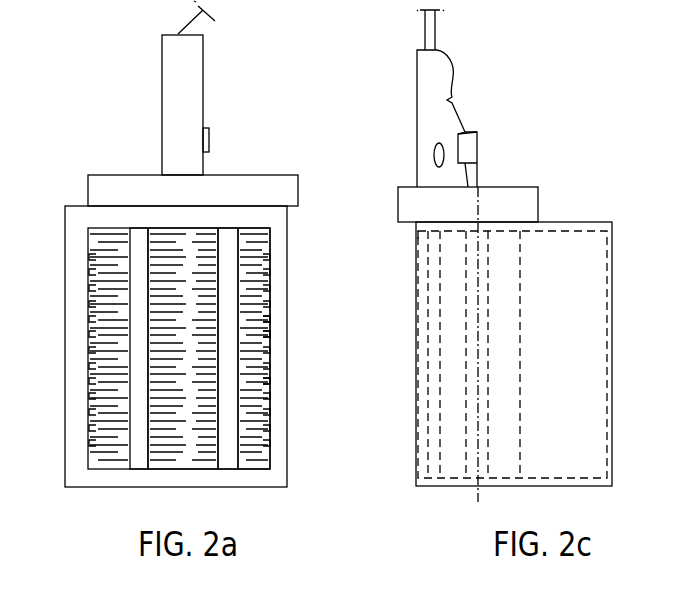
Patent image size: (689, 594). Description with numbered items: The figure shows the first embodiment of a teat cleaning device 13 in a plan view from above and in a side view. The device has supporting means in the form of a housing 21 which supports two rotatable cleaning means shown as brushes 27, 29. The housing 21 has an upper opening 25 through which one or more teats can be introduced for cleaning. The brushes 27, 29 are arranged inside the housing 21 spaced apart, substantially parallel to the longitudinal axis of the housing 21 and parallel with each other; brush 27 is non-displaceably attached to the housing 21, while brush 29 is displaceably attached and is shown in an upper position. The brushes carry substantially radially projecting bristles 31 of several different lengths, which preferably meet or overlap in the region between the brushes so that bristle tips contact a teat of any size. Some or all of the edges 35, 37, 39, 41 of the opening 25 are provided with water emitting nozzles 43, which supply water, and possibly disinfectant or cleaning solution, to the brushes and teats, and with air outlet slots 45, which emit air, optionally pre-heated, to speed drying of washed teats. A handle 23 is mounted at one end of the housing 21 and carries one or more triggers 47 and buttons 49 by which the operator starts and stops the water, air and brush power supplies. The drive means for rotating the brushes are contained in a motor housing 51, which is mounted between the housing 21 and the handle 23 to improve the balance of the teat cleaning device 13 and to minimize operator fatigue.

In FIG. 2c, the teat cleaning device 13 is at (600, 212).
In FIG. 2a, the housing 21 is at (78, 288).
In FIG. 2c, the housing 21 is at (597, 342).
In FIG. 2a, the handle 23 is at (197, 68).
In FIG. 2c, the handle 23 is at (458, 88).
In FIG. 2a, the upper opening 25 is at (260, 465).
In FIG. 2a, the brush 27 is at (227, 462).
In FIG. 2c, the brush 27 is at (462, 493).
In FIG. 2a, the brush 29 is at (137, 462).
In FIG. 2a, the bristles 31 is at (247, 378).
In FIG. 2a, the edge of opening 35 is at (199, 228).
In FIG. 2a, the edge of opening 37 is at (270, 338).
In FIG. 2a, the edge of opening 39 is at (187, 472).
In FIG. 2a, the edge of opening 41 is at (87, 233).
In FIG. 2a, the nozzles 43 is at (270, 320).
In FIG. 2a, the air outlet slots 45 is at (270, 285).
In FIG. 2c, the trigger 47 is at (483, 133).
In FIG. 2a, the button 49 is at (210, 137).
In FIG. 2c, the button 49 is at (433, 155).
In FIG. 2a, the motor housing 51 is at (266, 181).
In FIG. 2c, the motor housing 51 is at (523, 187).